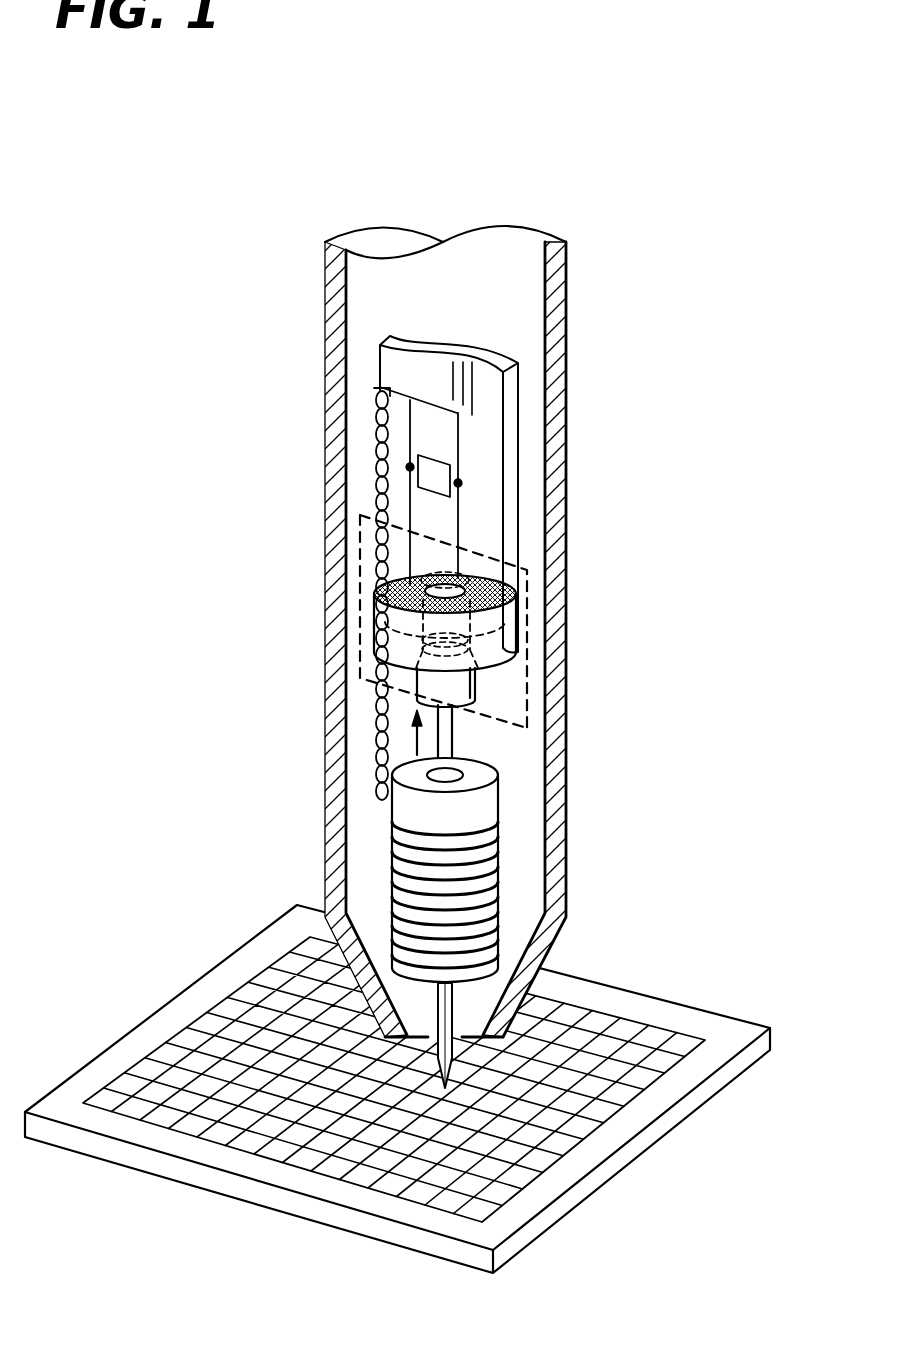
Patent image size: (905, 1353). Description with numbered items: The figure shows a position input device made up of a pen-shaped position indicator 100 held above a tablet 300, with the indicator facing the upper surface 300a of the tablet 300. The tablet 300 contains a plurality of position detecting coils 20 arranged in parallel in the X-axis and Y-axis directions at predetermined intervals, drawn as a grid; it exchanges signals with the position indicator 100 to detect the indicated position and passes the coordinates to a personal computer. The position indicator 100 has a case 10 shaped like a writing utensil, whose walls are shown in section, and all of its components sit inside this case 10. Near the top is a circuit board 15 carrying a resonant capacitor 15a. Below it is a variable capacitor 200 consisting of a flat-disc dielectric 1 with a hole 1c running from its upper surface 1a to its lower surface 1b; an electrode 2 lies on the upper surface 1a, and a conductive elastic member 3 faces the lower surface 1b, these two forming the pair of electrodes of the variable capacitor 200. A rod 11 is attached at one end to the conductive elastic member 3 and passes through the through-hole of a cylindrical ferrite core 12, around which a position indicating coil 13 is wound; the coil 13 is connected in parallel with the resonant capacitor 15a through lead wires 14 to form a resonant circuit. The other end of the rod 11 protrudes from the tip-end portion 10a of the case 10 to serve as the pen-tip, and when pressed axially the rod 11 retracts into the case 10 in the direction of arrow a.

The position indicator 100 is at (298, 311).
The case 10 is at (325, 446).
The tip-end portion 10a is at (515, 1008).
The circuit board 15 is at (488, 397).
The resonant capacitor 15a is at (437, 473).
The dielectric 1 is at (471, 620).
The upper surface 1a is at (484, 588).
The lower surface 1b is at (493, 656).
The hole 1c is at (470, 642).
The electrode 2 is at (373, 585).
The variable capacitor 200 is at (530, 594).
The conductive elastic member 3 is at (470, 698).
The rod 11 is at (452, 742).
The ferrite core 12 is at (483, 802).
The position indicating coil 13 is at (500, 863).
The lead wires 14 is at (373, 757).
The direction of arrow a is at (393, 735).
The position detecting coils 20 is at (628, 1058).
The tablet 300 is at (343, 1218).
The upper surface 300a is at (195, 995).